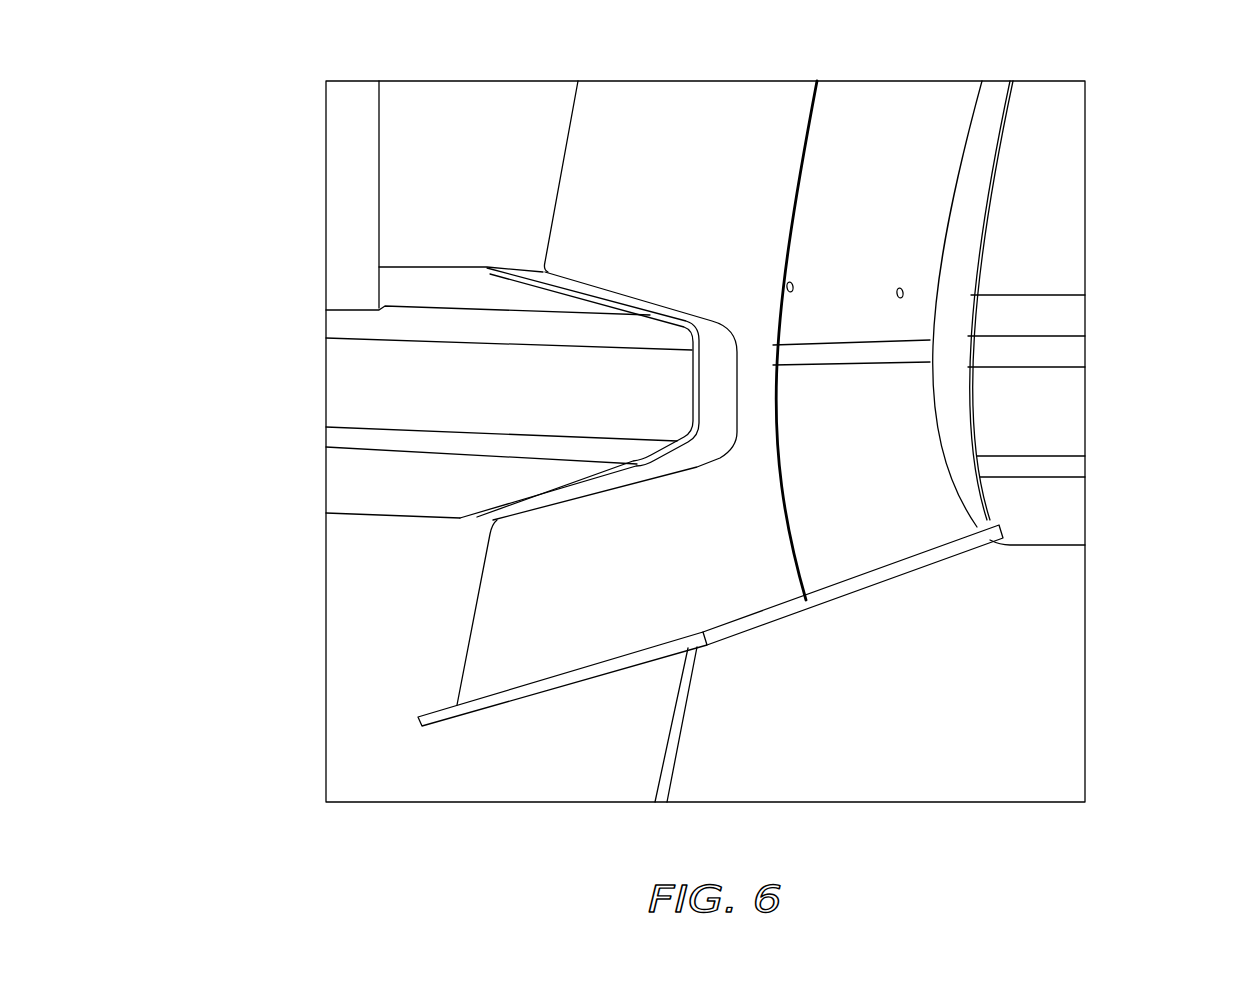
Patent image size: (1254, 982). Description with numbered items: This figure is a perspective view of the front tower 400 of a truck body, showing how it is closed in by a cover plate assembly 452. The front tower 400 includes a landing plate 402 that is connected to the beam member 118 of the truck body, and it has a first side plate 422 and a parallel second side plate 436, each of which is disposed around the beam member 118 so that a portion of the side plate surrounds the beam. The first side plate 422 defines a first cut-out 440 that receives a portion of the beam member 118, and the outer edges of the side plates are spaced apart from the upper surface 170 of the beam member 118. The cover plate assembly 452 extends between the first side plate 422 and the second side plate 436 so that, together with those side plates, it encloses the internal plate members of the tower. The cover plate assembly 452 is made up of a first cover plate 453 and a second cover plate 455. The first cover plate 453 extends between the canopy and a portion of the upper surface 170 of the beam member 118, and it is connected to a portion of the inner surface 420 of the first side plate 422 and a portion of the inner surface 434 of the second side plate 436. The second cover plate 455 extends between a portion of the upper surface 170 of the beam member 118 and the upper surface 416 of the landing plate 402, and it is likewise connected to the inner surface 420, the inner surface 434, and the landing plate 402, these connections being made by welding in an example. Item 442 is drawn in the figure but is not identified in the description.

The front tower 400 is at (516, 140).
The first side plate 422 is at (661, 143).
The inner surface 420 is at (818, 148).
The inner surface 434 is at (967, 233).
The second side plate 436 is at (987, 114).
The first cover plate 453 is at (942, 152).
The cover plate assembly 452 is at (916, 262).
The upper surface 170 is at (1061, 352).
The beam member 118 is at (1063, 404).
The second cover plate 455 is at (923, 498).
The outer flange 442 is at (725, 341).
The first cut-out 440 is at (696, 421).
The landing plate 402 is at (515, 697).
The upper surface 416 is at (876, 560).